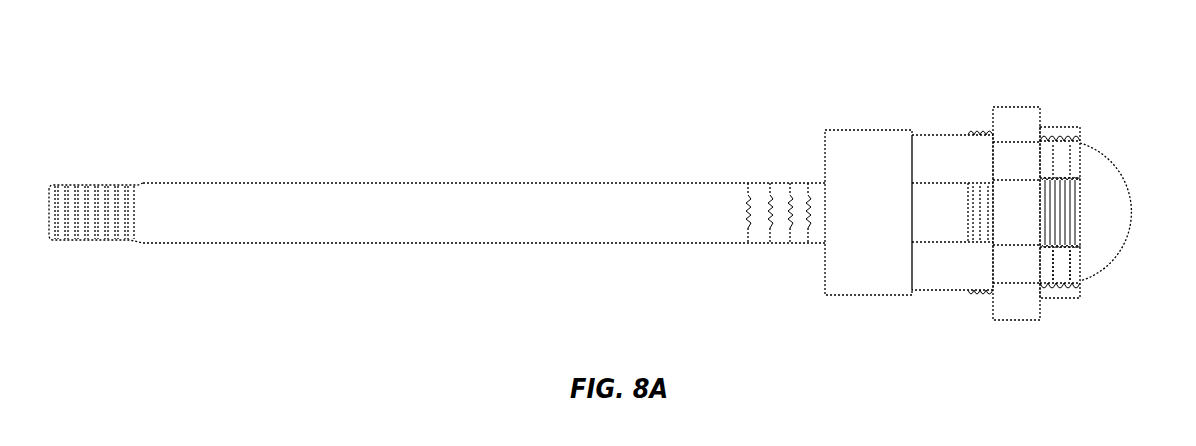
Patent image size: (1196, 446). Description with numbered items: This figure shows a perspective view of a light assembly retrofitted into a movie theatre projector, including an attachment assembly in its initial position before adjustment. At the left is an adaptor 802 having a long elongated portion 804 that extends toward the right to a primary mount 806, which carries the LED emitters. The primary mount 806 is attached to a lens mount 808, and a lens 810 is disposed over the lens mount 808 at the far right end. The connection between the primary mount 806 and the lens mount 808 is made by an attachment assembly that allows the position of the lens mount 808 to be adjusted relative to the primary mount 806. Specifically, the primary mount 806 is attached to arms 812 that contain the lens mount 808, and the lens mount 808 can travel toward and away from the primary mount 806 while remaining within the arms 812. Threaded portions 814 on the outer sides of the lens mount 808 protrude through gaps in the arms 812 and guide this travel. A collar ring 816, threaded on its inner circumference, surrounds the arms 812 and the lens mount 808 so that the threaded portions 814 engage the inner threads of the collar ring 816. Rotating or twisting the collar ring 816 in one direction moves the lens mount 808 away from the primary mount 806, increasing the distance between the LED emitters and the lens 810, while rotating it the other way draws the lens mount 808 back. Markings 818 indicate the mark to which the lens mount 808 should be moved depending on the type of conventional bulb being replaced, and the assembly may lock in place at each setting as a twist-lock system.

The adaptor 802 is at (320, 142).
The elongated portion 804 is at (418, 200).
The primary mount 806 is at (850, 152).
The lens mount 808 is at (1068, 133).
The lens 810 is at (1093, 260).
The arms 812 is at (943, 257).
The threaded portions 814 is at (1067, 215).
The collar ring 816 is at (1012, 122).
The markings 818 is at (1058, 275).